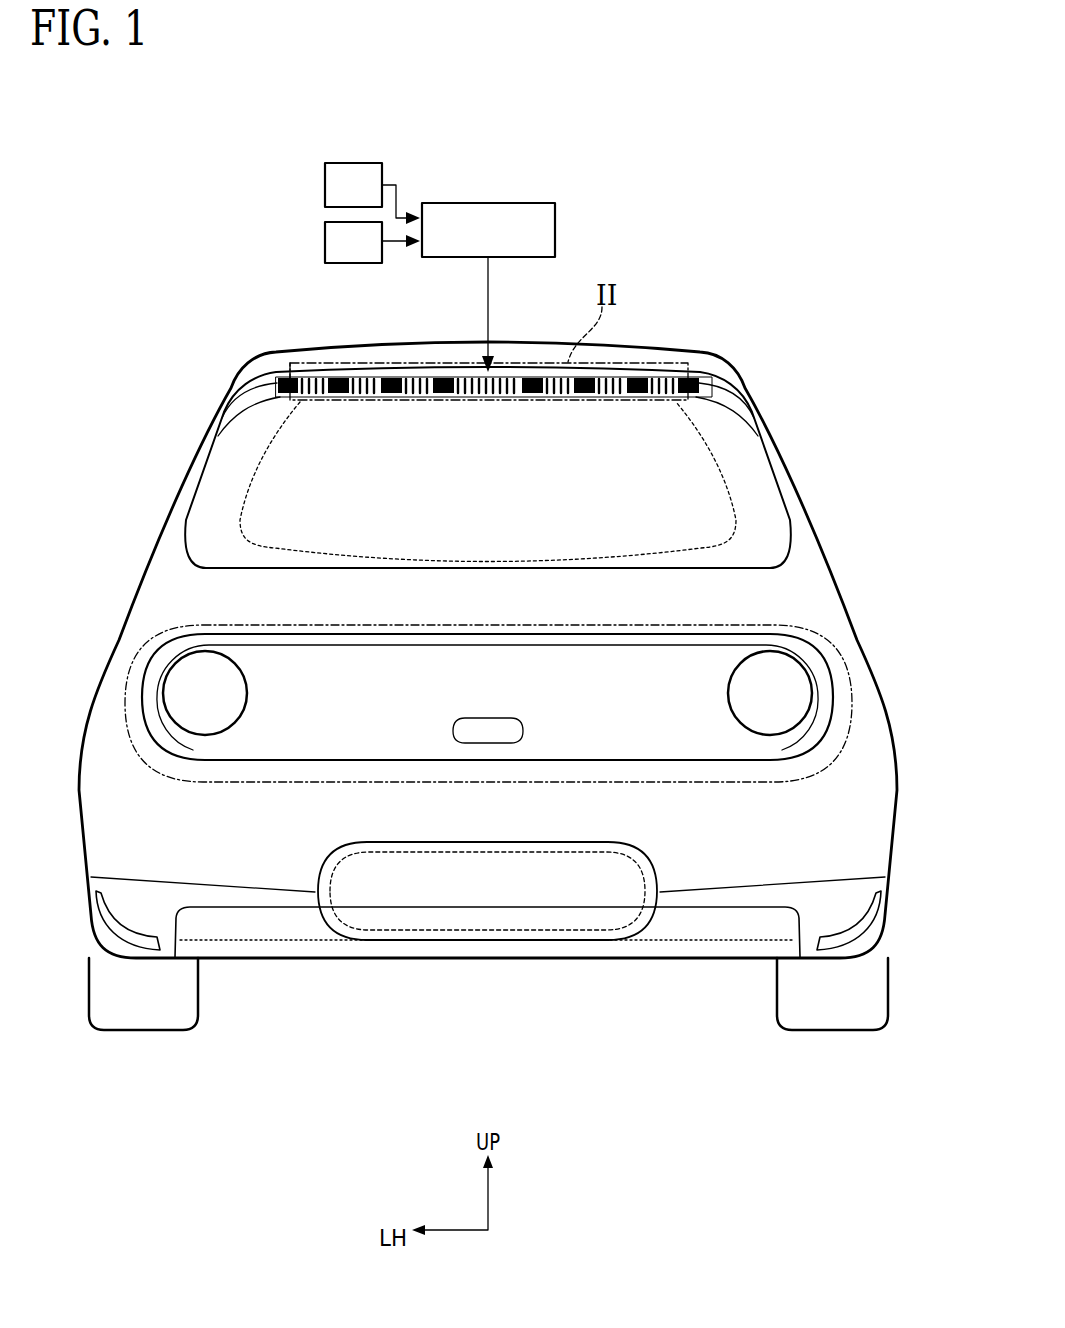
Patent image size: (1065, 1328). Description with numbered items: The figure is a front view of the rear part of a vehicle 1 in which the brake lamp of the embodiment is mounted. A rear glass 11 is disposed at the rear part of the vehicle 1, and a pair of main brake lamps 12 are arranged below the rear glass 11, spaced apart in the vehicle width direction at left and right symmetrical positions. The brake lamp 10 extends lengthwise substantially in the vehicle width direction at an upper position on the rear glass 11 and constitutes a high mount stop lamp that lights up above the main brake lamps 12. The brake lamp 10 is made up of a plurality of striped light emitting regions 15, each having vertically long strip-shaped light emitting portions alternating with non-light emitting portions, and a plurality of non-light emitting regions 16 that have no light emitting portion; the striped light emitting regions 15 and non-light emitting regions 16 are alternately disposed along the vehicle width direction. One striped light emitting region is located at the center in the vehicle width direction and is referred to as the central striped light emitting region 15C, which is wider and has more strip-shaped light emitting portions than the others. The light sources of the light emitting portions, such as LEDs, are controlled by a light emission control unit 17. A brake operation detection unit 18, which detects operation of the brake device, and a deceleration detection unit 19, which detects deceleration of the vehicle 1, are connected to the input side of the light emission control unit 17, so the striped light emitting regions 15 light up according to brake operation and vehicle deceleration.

The vehicle 1 is at (755, 270).
The vehicle brake lamp 10 is at (618, 370).
The rear glass 11 is at (752, 483).
The main brake lamps 12 is at (195, 702).
The striped light emitting regions 15 is at (415, 380).
The central striped light emitting region 15C is at (479, 372).
The non-light emitting regions 16 is at (442, 400).
The light emission control unit 17 is at (520, 203).
The brake operation detection unit 18 is at (355, 163).
The deceleration detection unit 19 is at (325, 242).